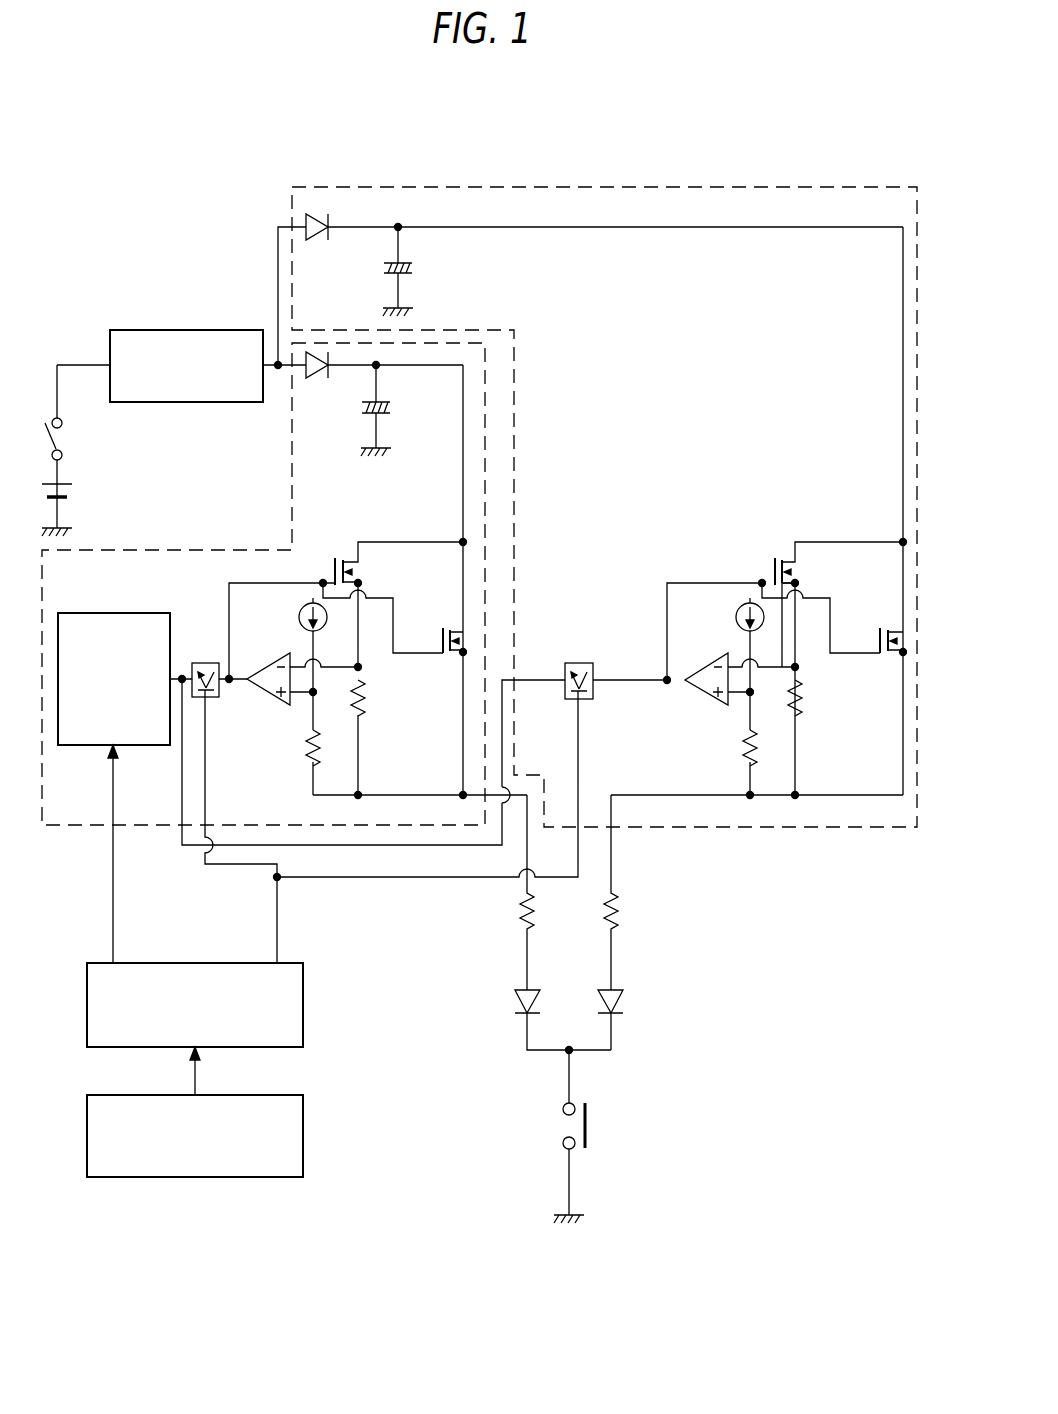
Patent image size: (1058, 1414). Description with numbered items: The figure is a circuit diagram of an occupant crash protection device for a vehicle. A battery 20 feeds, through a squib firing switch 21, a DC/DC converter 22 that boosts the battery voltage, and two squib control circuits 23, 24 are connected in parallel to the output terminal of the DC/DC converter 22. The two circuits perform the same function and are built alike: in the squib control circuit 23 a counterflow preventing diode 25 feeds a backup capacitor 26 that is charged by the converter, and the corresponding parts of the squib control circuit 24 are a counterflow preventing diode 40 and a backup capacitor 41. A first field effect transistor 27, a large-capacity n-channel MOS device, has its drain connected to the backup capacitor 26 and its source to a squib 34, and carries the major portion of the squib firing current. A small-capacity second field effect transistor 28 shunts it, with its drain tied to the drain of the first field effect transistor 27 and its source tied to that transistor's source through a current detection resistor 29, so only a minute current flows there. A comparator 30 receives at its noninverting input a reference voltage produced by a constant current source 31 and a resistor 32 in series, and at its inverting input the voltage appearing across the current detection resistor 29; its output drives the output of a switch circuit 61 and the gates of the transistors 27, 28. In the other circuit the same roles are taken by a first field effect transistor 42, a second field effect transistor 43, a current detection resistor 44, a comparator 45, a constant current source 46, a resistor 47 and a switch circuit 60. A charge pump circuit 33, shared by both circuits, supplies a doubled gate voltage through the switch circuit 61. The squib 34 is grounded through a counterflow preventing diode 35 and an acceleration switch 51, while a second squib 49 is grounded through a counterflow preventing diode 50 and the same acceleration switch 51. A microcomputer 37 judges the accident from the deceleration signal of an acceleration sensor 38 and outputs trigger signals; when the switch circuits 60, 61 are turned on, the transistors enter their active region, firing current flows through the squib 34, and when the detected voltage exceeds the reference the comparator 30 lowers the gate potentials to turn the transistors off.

The battery 20 is at (73, 495).
The squib firing switch 21 is at (62, 440).
The DC/DC converter 22 is at (148, 330).
The squib control circuit 23 is at (398, 503).
The squib control circuit 24 is at (822, 287).
The counterflow preventing diode 25 is at (322, 352).
The backup capacitor 26 is at (362, 408).
The first field effect transistor 27 is at (438, 635).
The second field effect transistor 28 is at (331, 568).
The current detection resistor 29 is at (367, 703).
The comparator 30 is at (262, 691).
The constant current source 31 is at (299, 617).
The resistor 32 is at (298, 745).
The charge pump circuit 33 is at (148, 612).
The squib 34 is at (516, 911).
The counterflow preventing diode 35 is at (513, 1004).
The microcomputer 37 is at (303, 982).
The acceleration sensor 38 is at (303, 1113).
The counterflow preventing diode 40 is at (322, 212).
The backup capacitor 41 is at (413, 268).
The first field effect transistor 42 is at (875, 636).
The second field effect transistor 43 is at (770, 568).
The current detection resistor 44 is at (805, 703).
The comparator 45 is at (700, 691).
The constant current source 46 is at (736, 617).
The resistor 47 is at (738, 745).
The squib 49 is at (622, 912).
The counterflow preventing diode 50 is at (624, 1004).
The acceleration switch 51 is at (590, 1122).
The switch circuit 60 is at (579, 663).
The switch circuit 61 is at (207, 663).